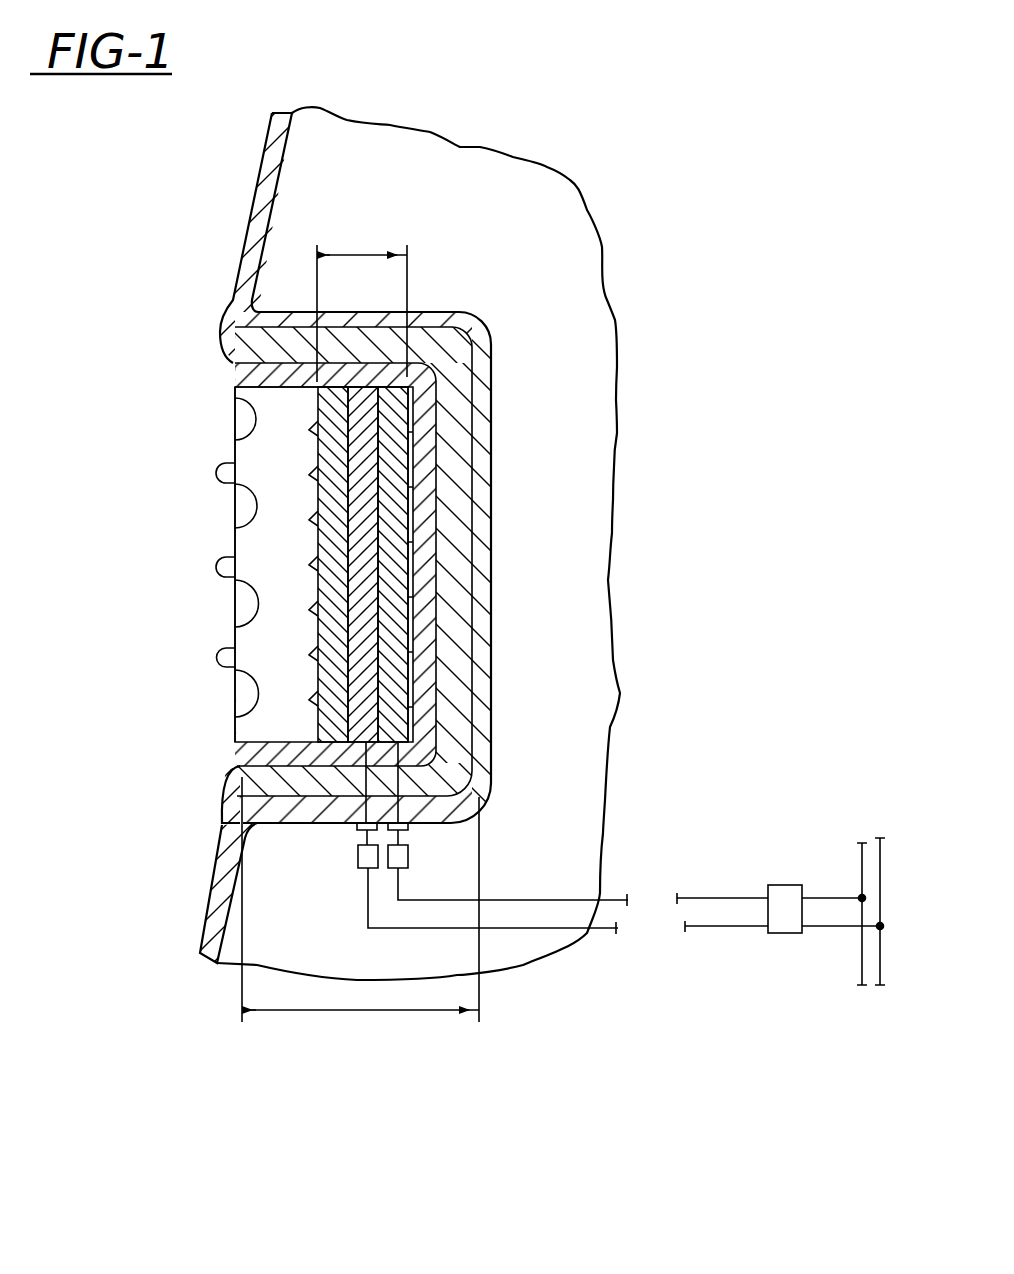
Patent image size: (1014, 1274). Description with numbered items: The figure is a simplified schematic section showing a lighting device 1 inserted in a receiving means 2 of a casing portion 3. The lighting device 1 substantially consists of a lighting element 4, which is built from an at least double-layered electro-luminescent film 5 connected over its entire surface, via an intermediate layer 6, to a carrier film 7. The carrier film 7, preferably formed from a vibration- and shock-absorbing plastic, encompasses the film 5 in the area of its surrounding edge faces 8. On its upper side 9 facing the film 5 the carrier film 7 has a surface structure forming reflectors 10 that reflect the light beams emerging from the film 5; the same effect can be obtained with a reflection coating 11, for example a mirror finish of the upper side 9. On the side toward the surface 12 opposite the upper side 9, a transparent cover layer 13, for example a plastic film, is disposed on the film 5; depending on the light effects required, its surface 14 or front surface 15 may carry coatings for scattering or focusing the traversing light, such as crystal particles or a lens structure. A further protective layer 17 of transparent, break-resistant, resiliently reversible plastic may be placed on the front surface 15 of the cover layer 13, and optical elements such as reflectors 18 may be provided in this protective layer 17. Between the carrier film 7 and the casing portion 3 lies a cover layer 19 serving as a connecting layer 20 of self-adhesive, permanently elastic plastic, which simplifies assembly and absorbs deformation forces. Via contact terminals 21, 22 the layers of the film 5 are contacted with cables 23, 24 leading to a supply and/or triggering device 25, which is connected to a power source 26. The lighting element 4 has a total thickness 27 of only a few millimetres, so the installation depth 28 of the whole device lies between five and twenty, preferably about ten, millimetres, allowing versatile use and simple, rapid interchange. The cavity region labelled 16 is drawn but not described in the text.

The lighting device 1 is at (190, 296).
The receiving means 2 is at (510, 325).
The casing portion 3 is at (612, 610).
The lighting element 4 is at (470, 418).
The electro-luminescent film 5 is at (365, 366).
The intermediate layer 6 is at (405, 457).
The carrier film 7 is at (427, 485).
The edge faces 8 is at (277, 380).
The upper side 9 is at (408, 613).
The reflectors 10 is at (415, 548).
The reflection coating 11 is at (408, 718).
The surface 12 is at (320, 568).
The transparent cover layer 13 is at (320, 410).
The surface 14 is at (352, 672).
The front surface 15 is at (318, 440).
The cavity 16 is at (278, 512).
The protective layer 17 is at (260, 645).
The reflectors 18 is at (240, 698).
The cover layer 19 is at (442, 697).
The connecting layer 20 is at (498, 593).
The contact terminal 21 is at (398, 787).
The contact terminal 22 is at (347, 796).
The cable 23 is at (398, 885).
The cable 24 is at (367, 885).
The supply and/or triggering device 25 is at (777, 948).
The power source 26 is at (843, 868).
The thickness 27 is at (355, 252).
The depth 28 is at (371, 1012).